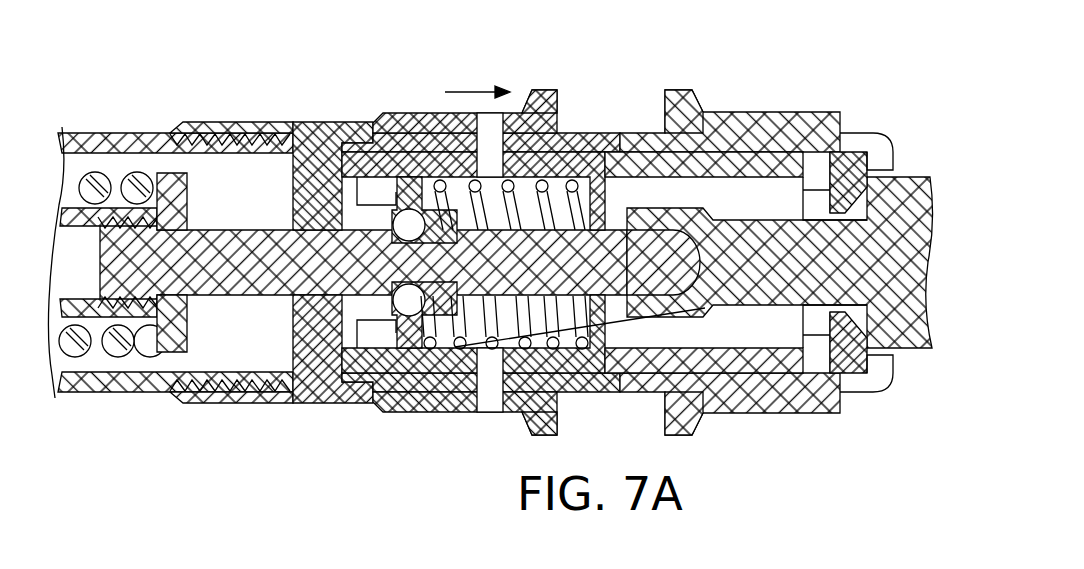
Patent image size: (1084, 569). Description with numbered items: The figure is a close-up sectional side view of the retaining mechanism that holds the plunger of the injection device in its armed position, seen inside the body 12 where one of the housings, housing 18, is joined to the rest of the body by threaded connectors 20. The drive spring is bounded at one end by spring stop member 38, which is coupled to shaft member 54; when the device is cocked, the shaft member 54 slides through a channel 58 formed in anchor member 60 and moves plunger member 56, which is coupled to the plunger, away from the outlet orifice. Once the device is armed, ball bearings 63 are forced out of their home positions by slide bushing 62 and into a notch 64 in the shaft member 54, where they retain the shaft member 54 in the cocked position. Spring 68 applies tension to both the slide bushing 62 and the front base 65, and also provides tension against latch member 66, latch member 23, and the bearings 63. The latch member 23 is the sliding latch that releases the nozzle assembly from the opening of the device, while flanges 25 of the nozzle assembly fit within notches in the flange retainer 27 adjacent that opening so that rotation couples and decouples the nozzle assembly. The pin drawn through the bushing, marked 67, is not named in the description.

The body 12 is at (494, 266).
The housing 18 is at (288, 405).
The threaded connectors 20 is at (205, 132).
The latch member 23 is at (783, 415).
The flanges 25 is at (848, 150).
The flange retainer 27 is at (880, 163).
The spring stop member 38 is at (280, 183).
The shaft member 54 is at (340, 243).
The plunger member 56 is at (853, 253).
The channel 58 is at (273, 243).
The anchor member 60 is at (313, 358).
The slide bushing 62 is at (403, 203).
The ball bearings 63 is at (408, 222).
The notch 64 is at (466, 400).
The front base 65 is at (644, 150).
The latch member 66 is at (540, 91).
The pin 67 is at (490, 133).
The spring 68 is at (596, 160).